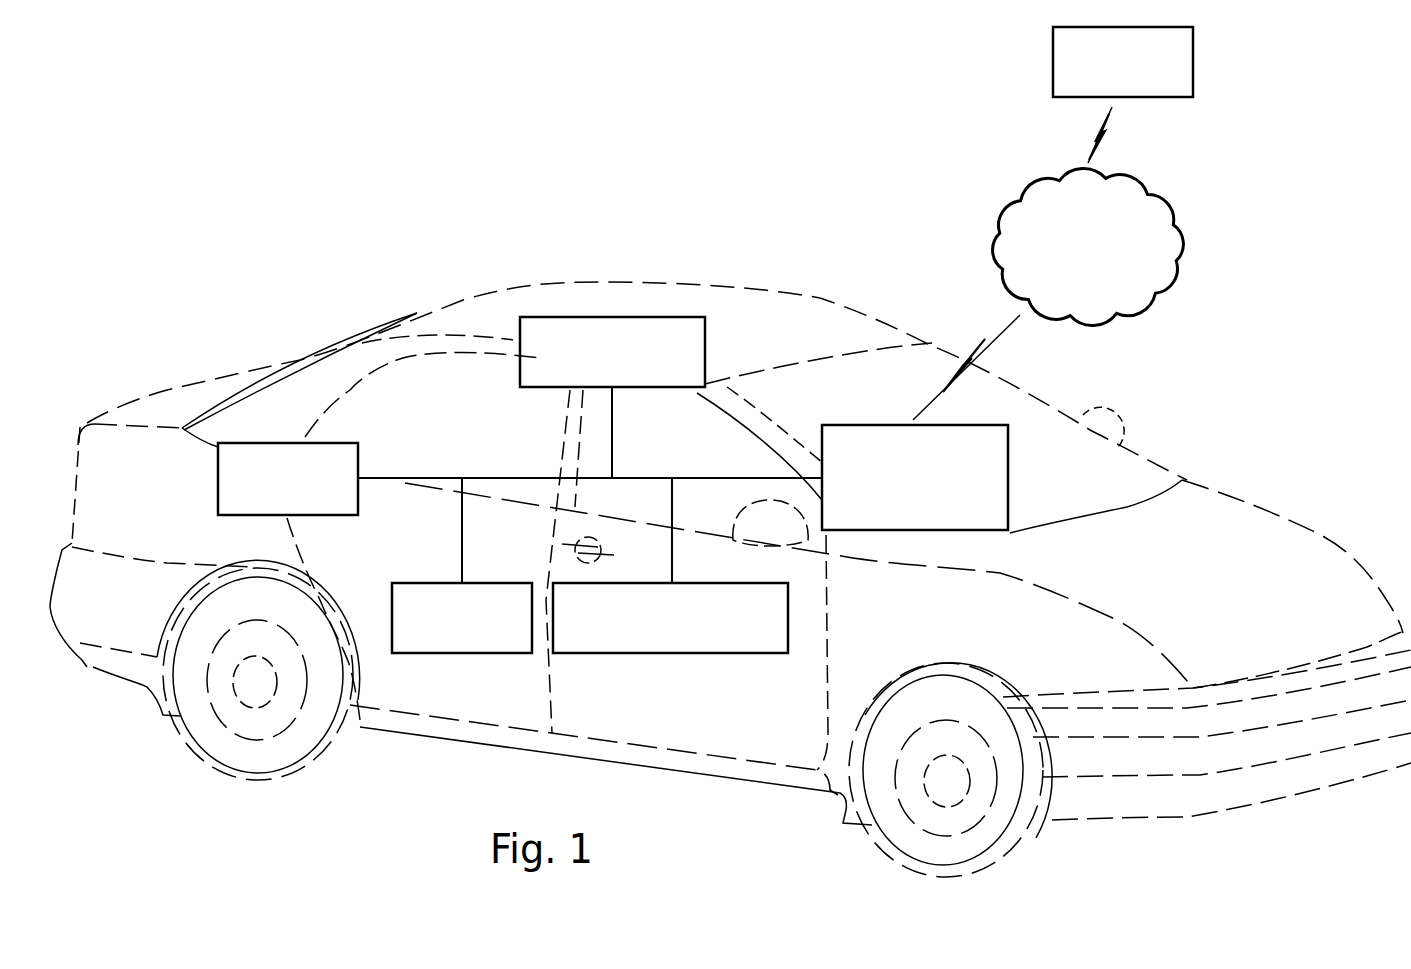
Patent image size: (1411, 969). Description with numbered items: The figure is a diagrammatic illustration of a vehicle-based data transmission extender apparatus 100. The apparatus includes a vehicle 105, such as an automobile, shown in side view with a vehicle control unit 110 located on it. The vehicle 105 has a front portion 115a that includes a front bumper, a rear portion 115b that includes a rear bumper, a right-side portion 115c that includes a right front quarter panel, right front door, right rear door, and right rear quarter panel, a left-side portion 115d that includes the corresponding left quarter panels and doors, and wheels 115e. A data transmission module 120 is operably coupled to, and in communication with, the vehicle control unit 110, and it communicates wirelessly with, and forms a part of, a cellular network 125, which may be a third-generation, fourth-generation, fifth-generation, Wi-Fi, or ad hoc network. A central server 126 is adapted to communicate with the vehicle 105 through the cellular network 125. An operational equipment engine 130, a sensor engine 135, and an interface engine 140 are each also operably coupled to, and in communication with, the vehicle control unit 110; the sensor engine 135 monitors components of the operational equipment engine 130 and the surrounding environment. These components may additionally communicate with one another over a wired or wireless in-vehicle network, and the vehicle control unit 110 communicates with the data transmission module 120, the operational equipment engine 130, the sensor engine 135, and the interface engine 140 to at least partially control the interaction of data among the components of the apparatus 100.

The vehicle-based data transmission extender apparatus 100 is at (388, 137).
The vehicle 105 is at (532, 281).
The vehicle control unit 110 is at (706, 348).
The front portion 115a is at (1335, 780).
The rear portion 115b is at (87, 667).
The right-side portion 115c is at (535, 742).
The left-side portion 115d is at (814, 300).
The wheels 115e is at (233, 770).
The data transmission module 120 is at (888, 425).
The cellular network 125 is at (1180, 246).
The central server 126 is at (1193, 62).
The operational equipment engine 130 is at (683, 655).
The sensor engine 135 is at (450, 655).
The interface engine 140 is at (218, 487).